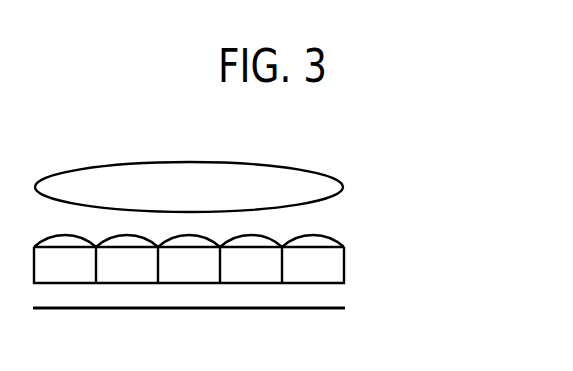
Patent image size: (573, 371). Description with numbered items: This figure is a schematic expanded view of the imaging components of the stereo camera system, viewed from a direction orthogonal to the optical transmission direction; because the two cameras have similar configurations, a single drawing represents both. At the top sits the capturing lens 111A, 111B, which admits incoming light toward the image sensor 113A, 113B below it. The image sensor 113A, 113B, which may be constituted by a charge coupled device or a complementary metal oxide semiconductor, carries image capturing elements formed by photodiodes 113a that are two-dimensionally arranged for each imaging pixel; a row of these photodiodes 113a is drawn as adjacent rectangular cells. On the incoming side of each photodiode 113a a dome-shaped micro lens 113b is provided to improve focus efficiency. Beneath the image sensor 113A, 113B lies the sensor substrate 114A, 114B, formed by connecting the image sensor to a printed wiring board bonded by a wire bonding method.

The capturing lens 111A is at (270, 187).
The capturing lens 111B is at (343, 187).
The image sensor 113A is at (269, 283).
The image sensor 113B is at (269, 283).
The photodiode 113a is at (252, 287).
The micro lens 113b is at (268, 239).
The sensor substrate 114A is at (269, 307).
The sensor substrate 114B is at (350, 295).